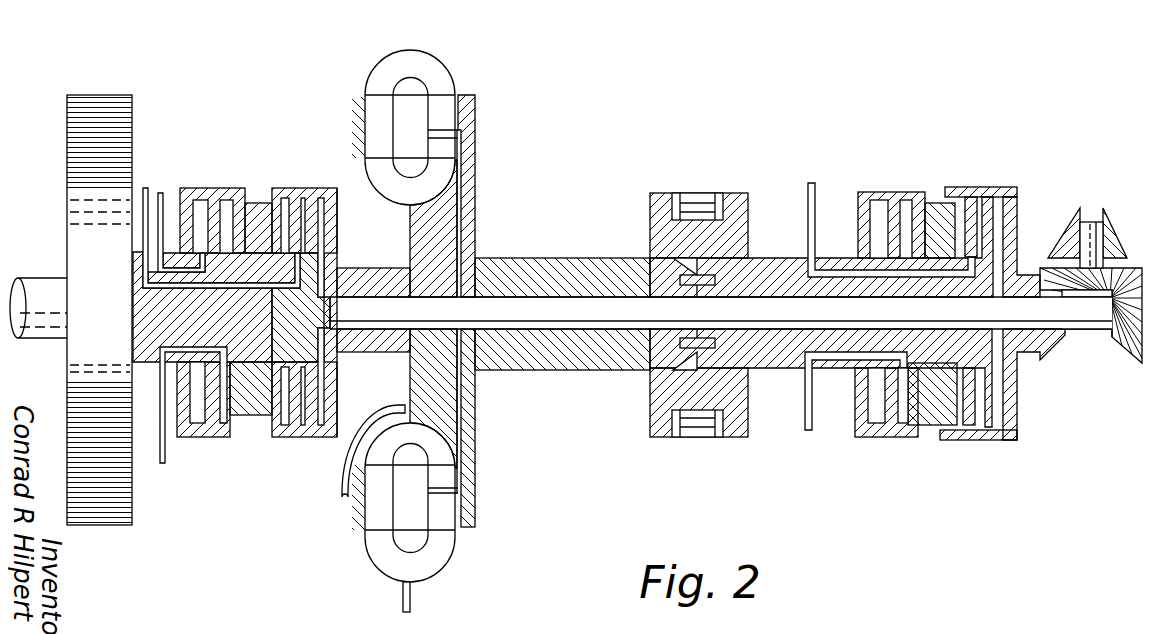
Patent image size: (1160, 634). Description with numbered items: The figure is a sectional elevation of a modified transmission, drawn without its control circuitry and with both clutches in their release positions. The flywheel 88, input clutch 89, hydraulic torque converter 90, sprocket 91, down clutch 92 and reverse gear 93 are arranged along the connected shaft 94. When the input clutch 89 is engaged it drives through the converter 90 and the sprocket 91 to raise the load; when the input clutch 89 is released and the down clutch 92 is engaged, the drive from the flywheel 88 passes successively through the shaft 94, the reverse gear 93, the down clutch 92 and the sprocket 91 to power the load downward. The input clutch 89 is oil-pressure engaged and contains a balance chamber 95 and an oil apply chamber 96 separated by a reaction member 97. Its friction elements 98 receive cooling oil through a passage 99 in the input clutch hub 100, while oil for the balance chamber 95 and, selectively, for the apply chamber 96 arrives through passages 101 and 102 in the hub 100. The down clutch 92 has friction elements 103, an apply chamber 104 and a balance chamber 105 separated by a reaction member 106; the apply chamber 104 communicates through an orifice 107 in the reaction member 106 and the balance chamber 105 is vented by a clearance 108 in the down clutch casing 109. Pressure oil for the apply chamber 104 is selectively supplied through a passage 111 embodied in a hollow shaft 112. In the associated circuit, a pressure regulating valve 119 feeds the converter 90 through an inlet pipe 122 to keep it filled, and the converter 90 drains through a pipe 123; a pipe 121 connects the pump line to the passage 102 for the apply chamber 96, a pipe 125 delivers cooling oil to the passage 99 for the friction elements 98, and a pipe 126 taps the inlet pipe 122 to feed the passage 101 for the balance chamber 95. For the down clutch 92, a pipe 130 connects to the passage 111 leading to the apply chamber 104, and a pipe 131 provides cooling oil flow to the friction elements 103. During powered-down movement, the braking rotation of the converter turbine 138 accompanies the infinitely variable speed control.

The flywheel 88 is at (87, 95).
The input clutch 89 is at (226, 143).
The hydraulic torque converter 90 is at (424, 38).
The sprocket 91 is at (650, 193).
The down clutch 92 is at (903, 182).
The reverse gear 93 is at (1088, 200).
The shaft 94 is at (540, 318).
The balance chamber 95 is at (199, 203).
The oil apply chamber 96 is at (226, 203).
The reaction member 97 is at (212, 200).
The friction elements 98 is at (295, 187).
The passage 99 is at (213, 290).
The input clutch hub 100 is at (238, 340).
The passage 101 is at (221, 268).
The passage 102 is at (215, 378).
The friction elements 103 is at (976, 185).
The apply chamber 104 is at (903, 423).
The balance chamber 105 is at (873, 423).
The reaction member 106 is at (878, 200).
The orifice 107 is at (893, 237).
The clearance 108 is at (858, 246).
The down clutch casing 109 is at (858, 197).
The passage 111 is at (840, 351).
The hollow shaft 112 is at (778, 253).
The pressure regulating valve 119 is at (821, 247).
The pipe 121 is at (165, 462).
The inlet pipe 122 is at (338, 491).
The pipe 123 is at (412, 597).
The pipe 125 is at (147, 187).
The pipe 126 is at (162, 193).
The pipe 130 is at (806, 413).
The pipe 131 is at (808, 186).
The converter turbine 138 is at (445, 103).